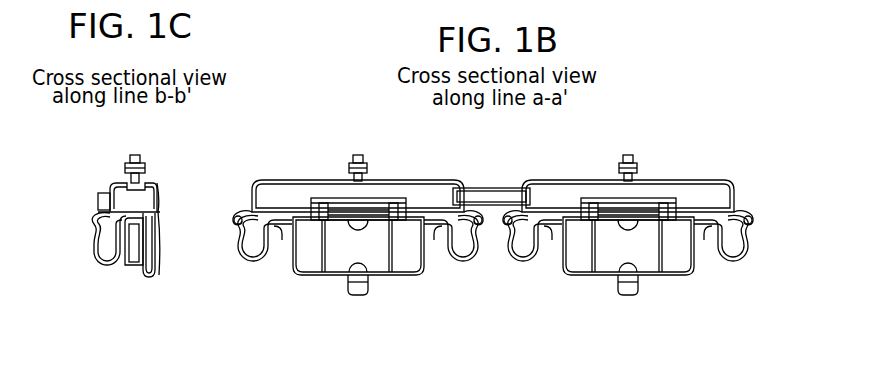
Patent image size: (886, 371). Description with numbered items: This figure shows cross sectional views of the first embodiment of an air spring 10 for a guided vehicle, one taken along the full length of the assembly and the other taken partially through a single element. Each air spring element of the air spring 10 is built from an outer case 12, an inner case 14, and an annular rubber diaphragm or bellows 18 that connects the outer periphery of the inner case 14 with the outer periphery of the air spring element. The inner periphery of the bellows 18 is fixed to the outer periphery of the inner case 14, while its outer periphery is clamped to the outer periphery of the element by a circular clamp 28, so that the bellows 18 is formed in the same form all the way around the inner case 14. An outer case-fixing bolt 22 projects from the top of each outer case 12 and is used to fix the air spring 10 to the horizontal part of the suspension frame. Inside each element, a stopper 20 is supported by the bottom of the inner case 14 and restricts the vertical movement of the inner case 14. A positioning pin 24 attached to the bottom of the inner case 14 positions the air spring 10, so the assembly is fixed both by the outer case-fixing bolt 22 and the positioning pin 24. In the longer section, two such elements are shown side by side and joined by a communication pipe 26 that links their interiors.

In FIG. 1B, the air spring 10 is at (766, 146).
In FIG. 1B, the outer case 12 is at (693, 180).
In FIG. 1C, the outer case 12 is at (108, 186).
In FIG. 1B, the inner case 14 is at (688, 277).
In FIG. 1C, the inner case 14 is at (156, 263).
In FIG. 1B, the rubber diaphragm (bellows) 18 is at (255, 258).
In FIG. 1C, the rubber diaphragm (bellows) 18 is at (102, 256).
In FIG. 1B, the stopper 20 is at (380, 199).
In FIG. 1B, the outer case-fixing bolt 22 is at (349, 165).
In FIG. 1C, the outer case-fixing bolt 22 is at (140, 158).
In FIG. 1B, the positioning pin 24 is at (358, 297).
In FIG. 1B, the communication pipe 26 is at (497, 190).
In FIG. 1B, the circular clamp 28 is at (233, 220).